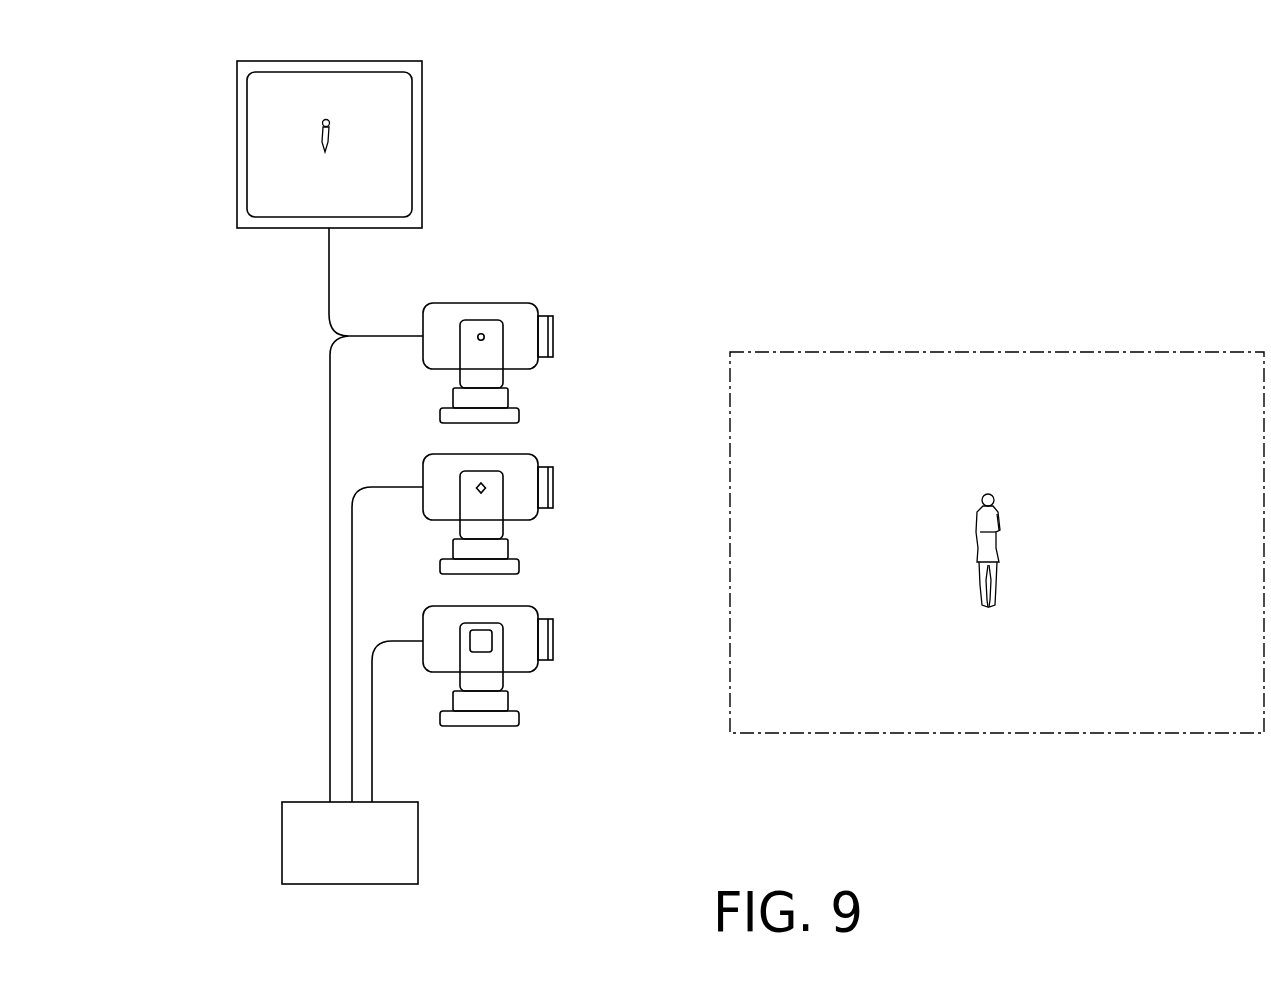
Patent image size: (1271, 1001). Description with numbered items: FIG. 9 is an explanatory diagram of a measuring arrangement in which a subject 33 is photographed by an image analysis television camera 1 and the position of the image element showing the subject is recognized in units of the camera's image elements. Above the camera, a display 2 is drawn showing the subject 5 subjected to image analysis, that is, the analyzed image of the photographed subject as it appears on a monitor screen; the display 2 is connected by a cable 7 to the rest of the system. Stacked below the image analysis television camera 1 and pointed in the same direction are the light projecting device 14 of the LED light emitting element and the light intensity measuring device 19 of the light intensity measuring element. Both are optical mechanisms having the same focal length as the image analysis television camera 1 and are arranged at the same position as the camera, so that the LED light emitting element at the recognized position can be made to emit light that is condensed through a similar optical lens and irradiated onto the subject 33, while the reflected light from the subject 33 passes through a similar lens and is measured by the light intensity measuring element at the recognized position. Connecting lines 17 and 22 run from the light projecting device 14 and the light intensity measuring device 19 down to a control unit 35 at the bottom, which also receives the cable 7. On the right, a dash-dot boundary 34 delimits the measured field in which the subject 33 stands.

The image analysis television camera 1 is at (518, 301).
The display device 2 is at (325, 58).
The subject subjected to image analysis 5 is at (338, 133).
The cable 7 is at (329, 275).
The light projecting device of the LED light emitting element 14 is at (518, 452).
The cable 17 is at (355, 579).
The light intensity measuring device of the light intensity measuring element 19 is at (532, 608).
The cable 22 is at (374, 753).
The subject of measurement 33 is at (975, 510).
The imaging region 34 is at (853, 348).
The control device 35 is at (420, 839).